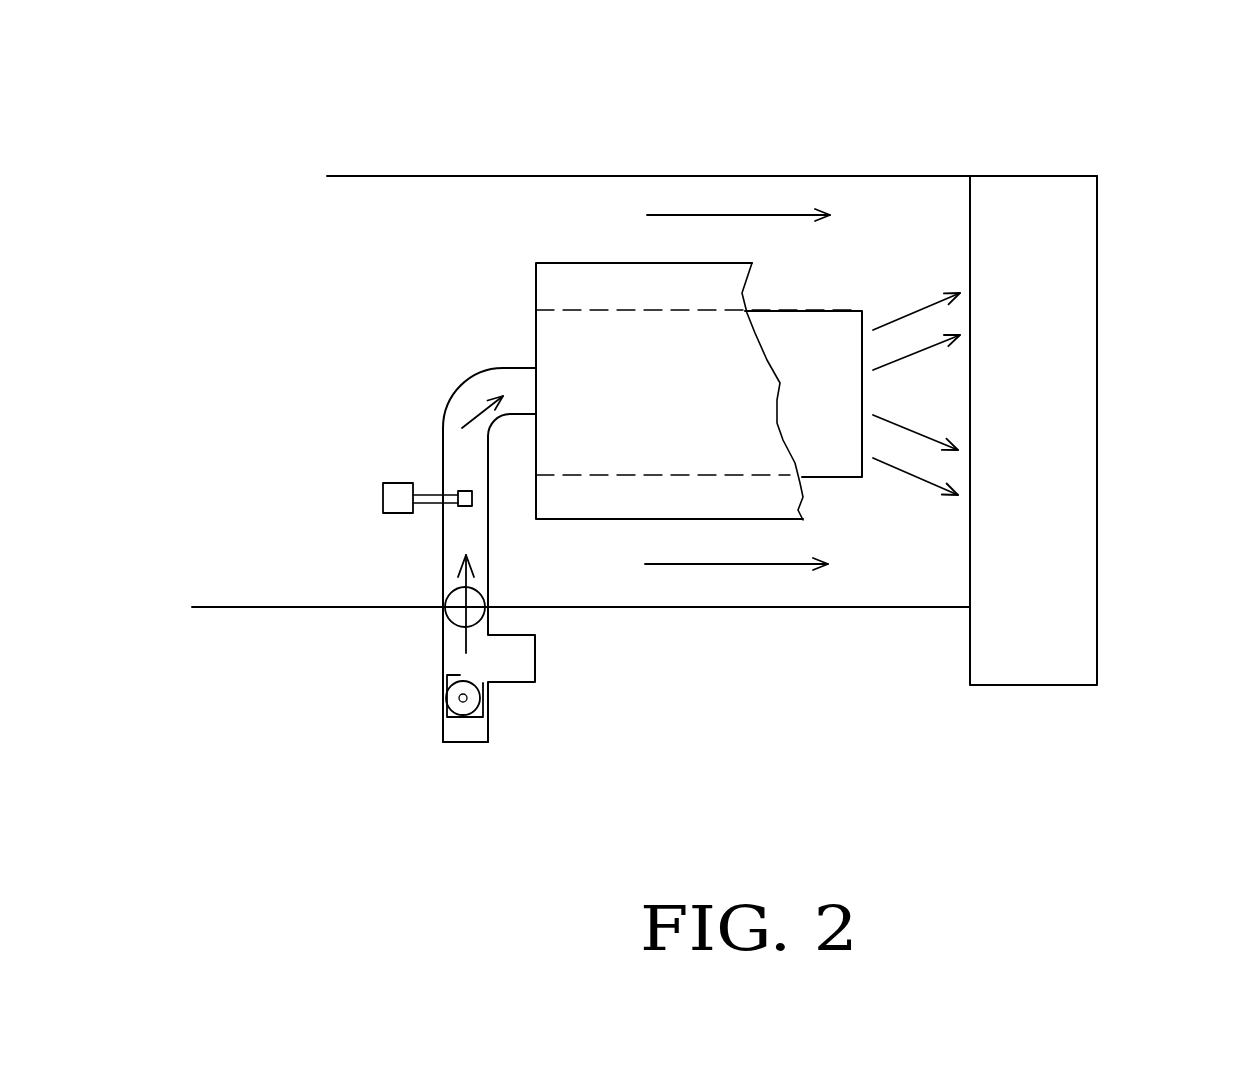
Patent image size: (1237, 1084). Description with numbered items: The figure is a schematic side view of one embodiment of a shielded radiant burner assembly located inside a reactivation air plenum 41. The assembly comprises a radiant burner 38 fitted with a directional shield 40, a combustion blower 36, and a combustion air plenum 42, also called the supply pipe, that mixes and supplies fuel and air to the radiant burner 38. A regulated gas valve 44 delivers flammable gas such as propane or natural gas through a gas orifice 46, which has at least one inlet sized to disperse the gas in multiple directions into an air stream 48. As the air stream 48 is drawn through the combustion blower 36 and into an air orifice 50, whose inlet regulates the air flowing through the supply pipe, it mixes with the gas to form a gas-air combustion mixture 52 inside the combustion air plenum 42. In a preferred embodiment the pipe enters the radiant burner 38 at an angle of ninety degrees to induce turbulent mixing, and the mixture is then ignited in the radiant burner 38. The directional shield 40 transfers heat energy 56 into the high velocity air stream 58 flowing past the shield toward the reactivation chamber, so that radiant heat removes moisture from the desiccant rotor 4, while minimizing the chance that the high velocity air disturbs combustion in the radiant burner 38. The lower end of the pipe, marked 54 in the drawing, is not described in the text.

The desiccant rotor 4 is at (1070, 504).
The combustion blower 36 is at (512, 728).
The radiant burner 38 is at (859, 293).
The directional shield 40 is at (674, 394).
The reactivation air plenum 41 is at (712, 109).
The combustion air plenum 42 is at (440, 542).
The regulated gas valve 44 is at (382, 500).
The gas orifice 46 is at (421, 469).
The air stream 48 is at (467, 647).
The air orifice 50 is at (443, 618).
The gas-air combustion mixture 52 is at (448, 539).
The pipe inlet 54 is at (463, 743).
The heat energy 56 is at (955, 392).
The high velocity air stream 58 is at (713, 384).